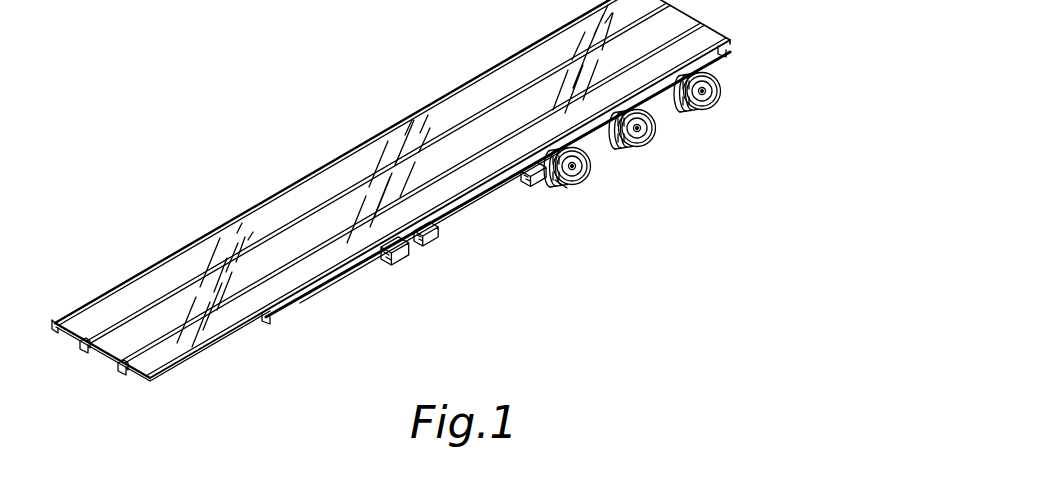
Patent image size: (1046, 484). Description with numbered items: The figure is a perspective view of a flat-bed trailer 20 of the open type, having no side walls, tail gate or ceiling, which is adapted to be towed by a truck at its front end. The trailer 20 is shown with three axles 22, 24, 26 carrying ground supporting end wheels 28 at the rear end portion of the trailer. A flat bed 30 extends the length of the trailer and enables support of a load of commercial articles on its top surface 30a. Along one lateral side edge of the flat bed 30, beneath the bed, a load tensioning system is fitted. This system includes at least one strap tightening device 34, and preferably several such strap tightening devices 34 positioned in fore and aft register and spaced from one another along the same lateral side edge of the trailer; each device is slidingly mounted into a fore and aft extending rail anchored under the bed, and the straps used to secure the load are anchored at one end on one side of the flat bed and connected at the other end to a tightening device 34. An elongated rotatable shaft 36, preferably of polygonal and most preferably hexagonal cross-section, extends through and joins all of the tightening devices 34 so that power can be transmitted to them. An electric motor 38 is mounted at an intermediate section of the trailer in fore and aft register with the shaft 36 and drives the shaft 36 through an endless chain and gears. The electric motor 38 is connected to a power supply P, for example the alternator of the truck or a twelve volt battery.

The flat-bed trailer 20 is at (391, 190).
The axle 22 is at (575, 165).
The axle 24 is at (650, 137).
The axle 26 is at (710, 107).
The ground supporting end wheels 28 is at (567, 190).
The flat bed 30 is at (340, 202).
The top surface 30a is at (462, 137).
The strap tightening device 34 is at (533, 182).
The rotatable shaft 36 is at (337, 275).
The electric motor 38 is at (440, 238).
The power supply P is at (402, 262).